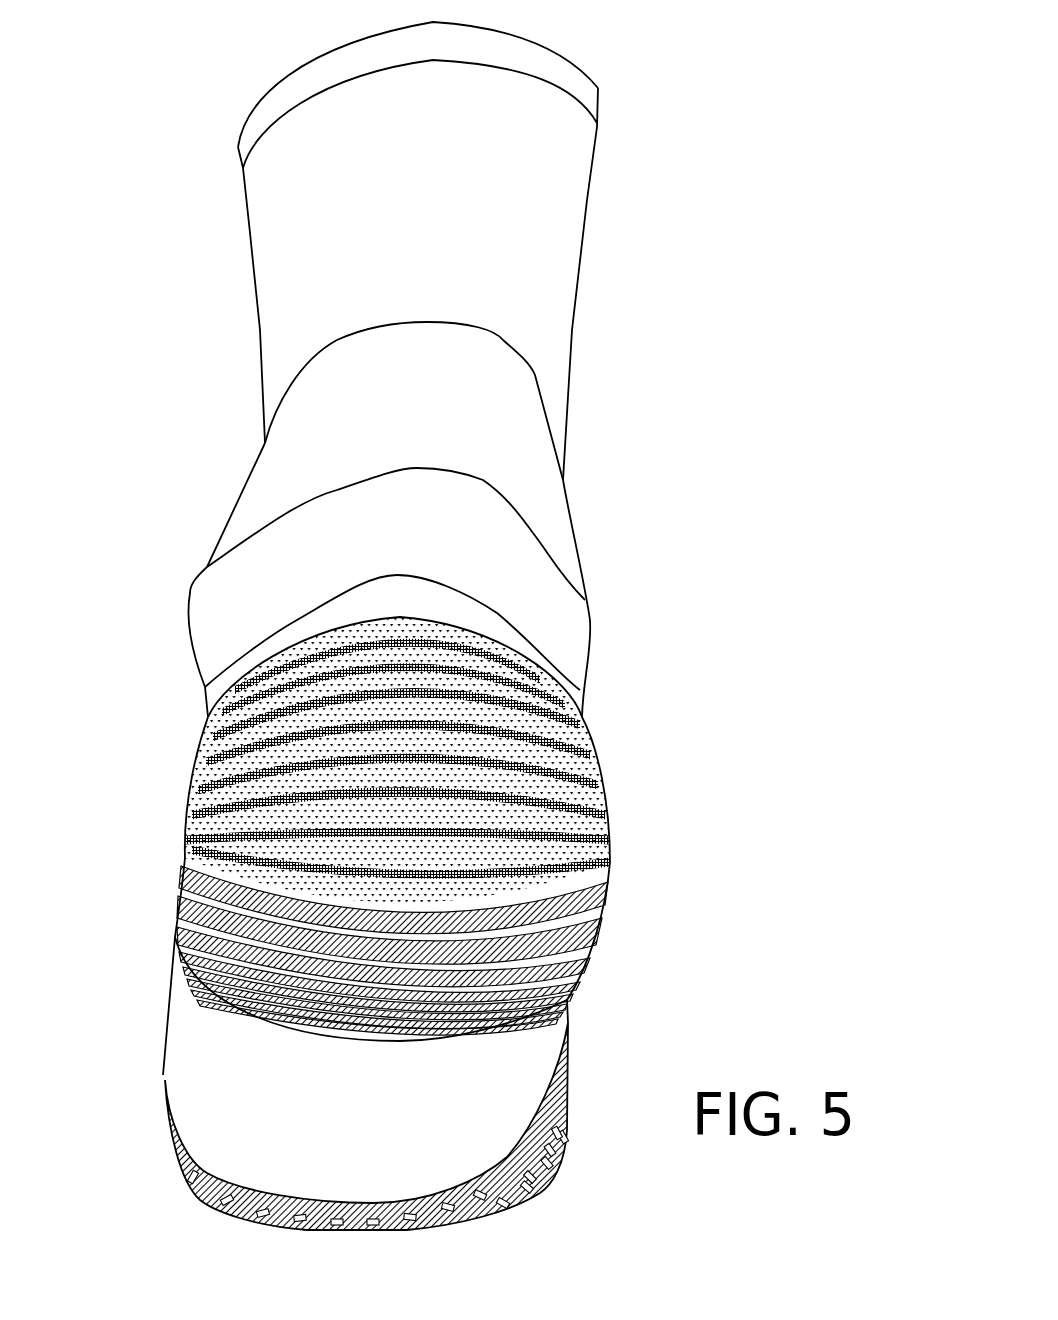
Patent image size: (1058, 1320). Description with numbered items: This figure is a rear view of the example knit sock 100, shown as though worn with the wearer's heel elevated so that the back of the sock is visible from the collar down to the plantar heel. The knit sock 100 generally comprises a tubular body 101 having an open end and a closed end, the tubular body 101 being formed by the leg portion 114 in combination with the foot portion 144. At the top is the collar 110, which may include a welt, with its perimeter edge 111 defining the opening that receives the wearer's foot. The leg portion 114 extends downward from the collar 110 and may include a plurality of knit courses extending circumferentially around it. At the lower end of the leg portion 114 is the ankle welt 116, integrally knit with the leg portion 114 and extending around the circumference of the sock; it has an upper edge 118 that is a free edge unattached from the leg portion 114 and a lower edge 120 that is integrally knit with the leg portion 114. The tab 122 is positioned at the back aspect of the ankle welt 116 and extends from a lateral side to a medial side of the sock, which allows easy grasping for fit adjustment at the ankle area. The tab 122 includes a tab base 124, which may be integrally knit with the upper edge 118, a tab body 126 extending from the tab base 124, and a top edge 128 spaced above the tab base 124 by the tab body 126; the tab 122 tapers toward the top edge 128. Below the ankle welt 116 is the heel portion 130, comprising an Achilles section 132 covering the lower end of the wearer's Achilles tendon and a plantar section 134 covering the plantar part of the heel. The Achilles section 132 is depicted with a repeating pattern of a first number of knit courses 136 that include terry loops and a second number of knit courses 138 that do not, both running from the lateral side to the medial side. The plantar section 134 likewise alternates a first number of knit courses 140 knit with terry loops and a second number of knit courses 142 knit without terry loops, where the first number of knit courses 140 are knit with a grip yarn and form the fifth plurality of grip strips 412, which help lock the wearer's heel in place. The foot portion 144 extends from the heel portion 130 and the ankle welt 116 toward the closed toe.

The knit sock 100 is at (829, 200).
The tubular body 101 is at (801, 352).
The collar 110 is at (580, 80).
The perimeter edge 111 is at (530, 33).
The leg portion 114 is at (611, 133).
The ankle welt 116 is at (558, 636).
The upper edge 118 is at (565, 576).
The lower edge 120 is at (437, 578).
The tab 122 is at (287, 473).
The tab base 124 is at (339, 484).
The tab body 126 is at (398, 416).
The top edge 128 is at (456, 320).
The heel portion 130 is at (116, 849).
The Achilles section 132 is at (618, 715).
The plantar section 134 is at (624, 873).
The first number of knit courses 136 is at (210, 745).
The second number of knit courses 138 is at (202, 780).
The first number of knit courses 140 is at (180, 893).
The second number of knit courses 142 is at (188, 955).
The foot portion 144 is at (594, 987).
The fifth plurality of grip strips 412 is at (272, 995).